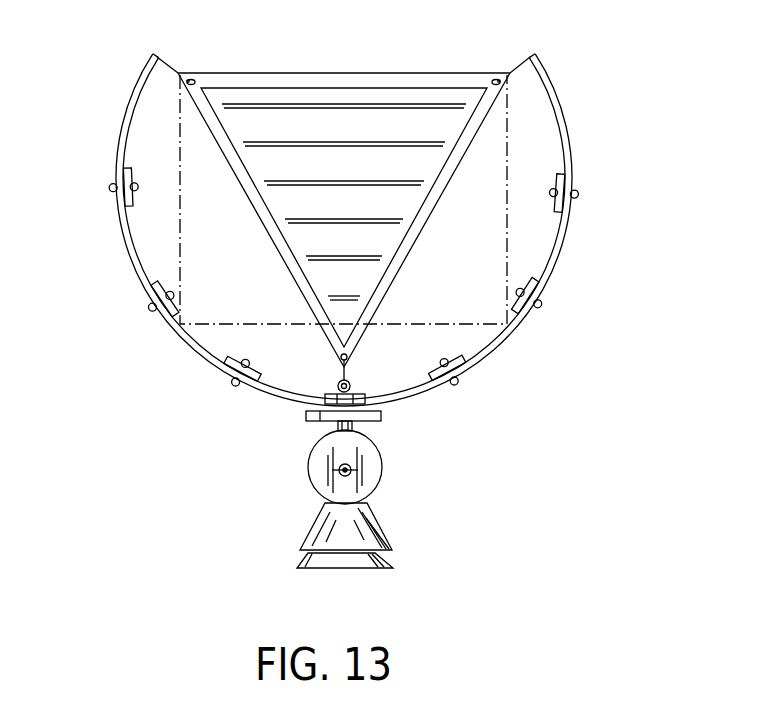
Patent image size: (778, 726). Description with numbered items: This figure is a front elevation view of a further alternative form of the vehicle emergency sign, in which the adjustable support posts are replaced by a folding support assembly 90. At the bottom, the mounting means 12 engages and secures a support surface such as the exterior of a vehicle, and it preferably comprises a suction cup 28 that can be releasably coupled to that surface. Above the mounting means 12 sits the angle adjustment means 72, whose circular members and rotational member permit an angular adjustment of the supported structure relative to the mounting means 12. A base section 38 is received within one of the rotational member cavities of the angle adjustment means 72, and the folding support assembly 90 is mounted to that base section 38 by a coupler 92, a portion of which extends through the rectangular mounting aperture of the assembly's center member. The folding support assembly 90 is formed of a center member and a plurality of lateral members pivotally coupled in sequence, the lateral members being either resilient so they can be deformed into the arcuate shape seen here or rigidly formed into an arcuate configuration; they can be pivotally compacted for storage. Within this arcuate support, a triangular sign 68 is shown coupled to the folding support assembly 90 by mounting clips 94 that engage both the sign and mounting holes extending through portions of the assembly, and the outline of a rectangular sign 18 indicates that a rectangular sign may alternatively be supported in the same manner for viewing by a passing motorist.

The mounting means 12 is at (385, 517).
The rectangular sign 18 is at (180, 259).
The suction cup 28 is at (393, 566).
The base section 38 is at (356, 426).
The triangular sign 68 is at (301, 84).
The angle adjustment means 72 is at (300, 469).
The folding support assembly 90 is at (580, 223).
The coupler 92 is at (307, 415).
The mounting clips 94 is at (165, 64).